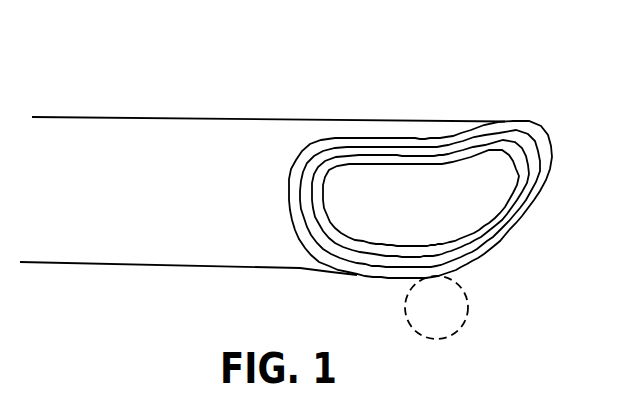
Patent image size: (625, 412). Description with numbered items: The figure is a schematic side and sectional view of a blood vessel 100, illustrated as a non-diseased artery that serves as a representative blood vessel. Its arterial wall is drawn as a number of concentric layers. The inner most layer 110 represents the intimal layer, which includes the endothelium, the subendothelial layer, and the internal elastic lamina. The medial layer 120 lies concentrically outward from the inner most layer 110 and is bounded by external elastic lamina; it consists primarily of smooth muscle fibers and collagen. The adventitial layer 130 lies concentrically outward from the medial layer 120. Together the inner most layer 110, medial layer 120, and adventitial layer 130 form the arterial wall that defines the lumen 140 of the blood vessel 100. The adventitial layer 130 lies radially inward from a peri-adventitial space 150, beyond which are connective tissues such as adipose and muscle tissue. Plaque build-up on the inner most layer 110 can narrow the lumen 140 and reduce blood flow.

The blood vessel 100 is at (502, 79).
The inner most layer 110 is at (510, 200).
The medial layer 120 is at (534, 177).
The adventitial layer 130 is at (540, 135).
The lumen 140 is at (440, 212).
The peri-adventitial space 150 is at (465, 311).